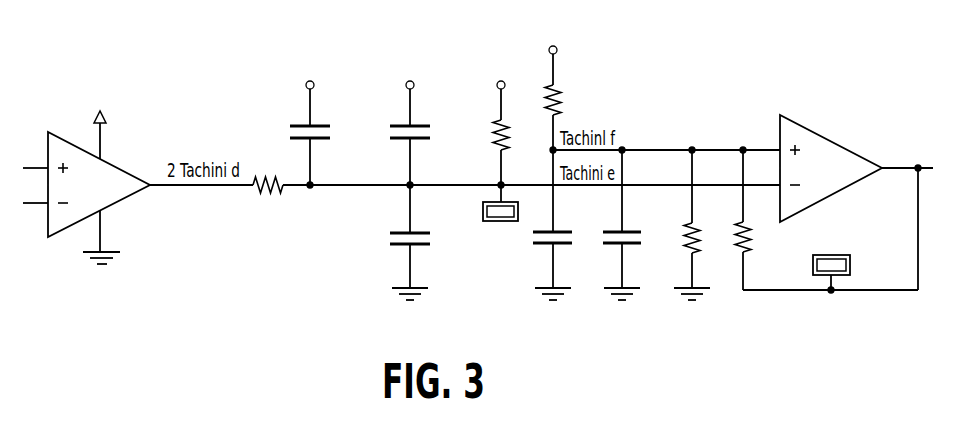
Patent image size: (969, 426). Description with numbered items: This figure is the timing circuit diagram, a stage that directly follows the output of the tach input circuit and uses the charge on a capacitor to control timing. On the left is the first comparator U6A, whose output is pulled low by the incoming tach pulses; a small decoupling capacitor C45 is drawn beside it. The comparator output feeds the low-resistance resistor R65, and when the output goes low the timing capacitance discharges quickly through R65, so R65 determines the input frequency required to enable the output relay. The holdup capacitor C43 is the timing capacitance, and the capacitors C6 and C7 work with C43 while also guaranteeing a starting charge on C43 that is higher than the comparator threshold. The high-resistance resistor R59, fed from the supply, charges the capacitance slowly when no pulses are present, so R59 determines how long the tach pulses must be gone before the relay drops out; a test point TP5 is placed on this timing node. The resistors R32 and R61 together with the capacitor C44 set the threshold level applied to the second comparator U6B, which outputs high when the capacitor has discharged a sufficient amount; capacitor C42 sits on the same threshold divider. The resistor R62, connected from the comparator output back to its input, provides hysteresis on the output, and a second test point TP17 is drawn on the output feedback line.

The operational amplifier V2901A (first stage) U6A is at (84, 174).
The capacitor 0.1uf C45 is at (48, 259).
The discharge resistor R65 is at (268, 186).
The starting-charge capacitor C6 is at (334, 121).
The starting-charge capacitor C7 is at (434, 121).
The holdup capacitor C43 is at (434, 242).
The charge resistor R59 is at (508, 130).
The test point TP5 is at (500, 232).
The threshold resistor R32 is at (559, 128).
The capacitor 10uF 16v C42 is at (565, 258).
The threshold capacitor C44 is at (641, 223).
The threshold resistor R61 is at (699, 223).
The hysteresis resistor R62 is at (755, 218).
The test point TP17 is at (831, 252).
The comparator LM2901A (second stage) U6B is at (847, 202).